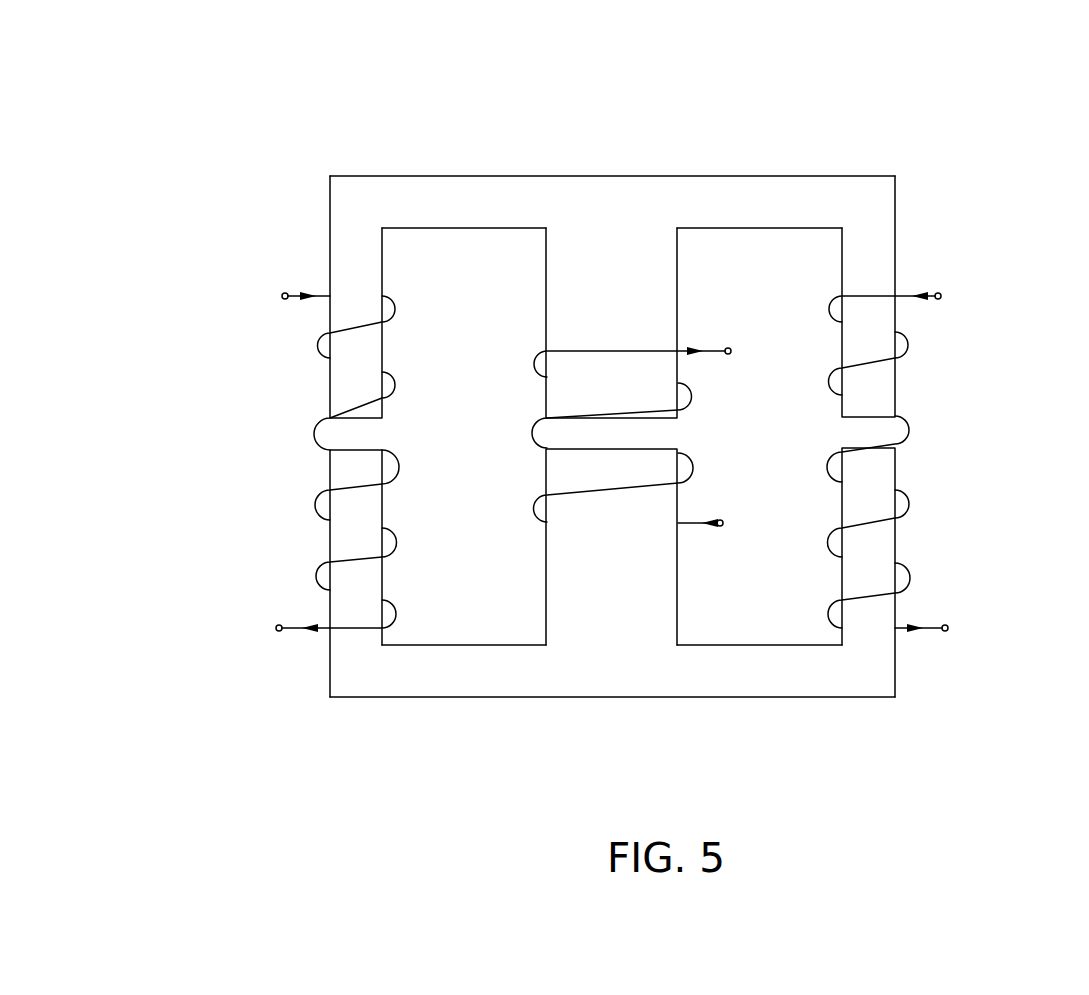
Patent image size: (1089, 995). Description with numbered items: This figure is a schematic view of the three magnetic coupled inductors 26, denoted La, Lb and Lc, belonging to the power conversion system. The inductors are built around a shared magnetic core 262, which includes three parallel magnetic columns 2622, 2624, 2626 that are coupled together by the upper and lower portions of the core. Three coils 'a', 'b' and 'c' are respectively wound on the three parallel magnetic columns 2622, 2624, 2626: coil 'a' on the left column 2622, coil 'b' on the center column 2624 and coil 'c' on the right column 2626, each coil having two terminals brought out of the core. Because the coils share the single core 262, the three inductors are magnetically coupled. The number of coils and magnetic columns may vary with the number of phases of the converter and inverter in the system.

The three magnetic coupled inductors 26 is at (330, 108).
The shared magnetic core 262 is at (608, 213).
The parallel magnetic column 2622 is at (356, 638).
The parallel magnetic column 2624 is at (612, 607).
The parallel magnetic column 2626 is at (870, 623).